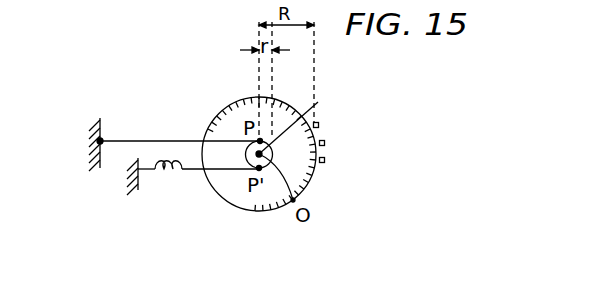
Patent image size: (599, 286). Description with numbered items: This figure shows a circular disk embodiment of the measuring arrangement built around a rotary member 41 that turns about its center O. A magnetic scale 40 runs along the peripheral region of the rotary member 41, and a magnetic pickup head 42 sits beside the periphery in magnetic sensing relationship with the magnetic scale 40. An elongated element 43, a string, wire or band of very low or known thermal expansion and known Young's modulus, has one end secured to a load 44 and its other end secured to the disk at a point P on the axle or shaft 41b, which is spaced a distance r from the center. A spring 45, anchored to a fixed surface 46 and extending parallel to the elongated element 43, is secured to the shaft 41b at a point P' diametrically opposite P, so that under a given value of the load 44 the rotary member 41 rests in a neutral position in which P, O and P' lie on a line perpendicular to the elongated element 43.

The magnetic scale 40 is at (307, 188).
The rotary member 41 is at (225, 113).
The axle or shaft 41b is at (312, 118).
The magnetic pickup head 42 is at (326, 143).
The elongated element 43 is at (157, 140).
The load 44 is at (88, 133).
The spring 45 is at (167, 176).
The fixed surface 46 is at (128, 178).